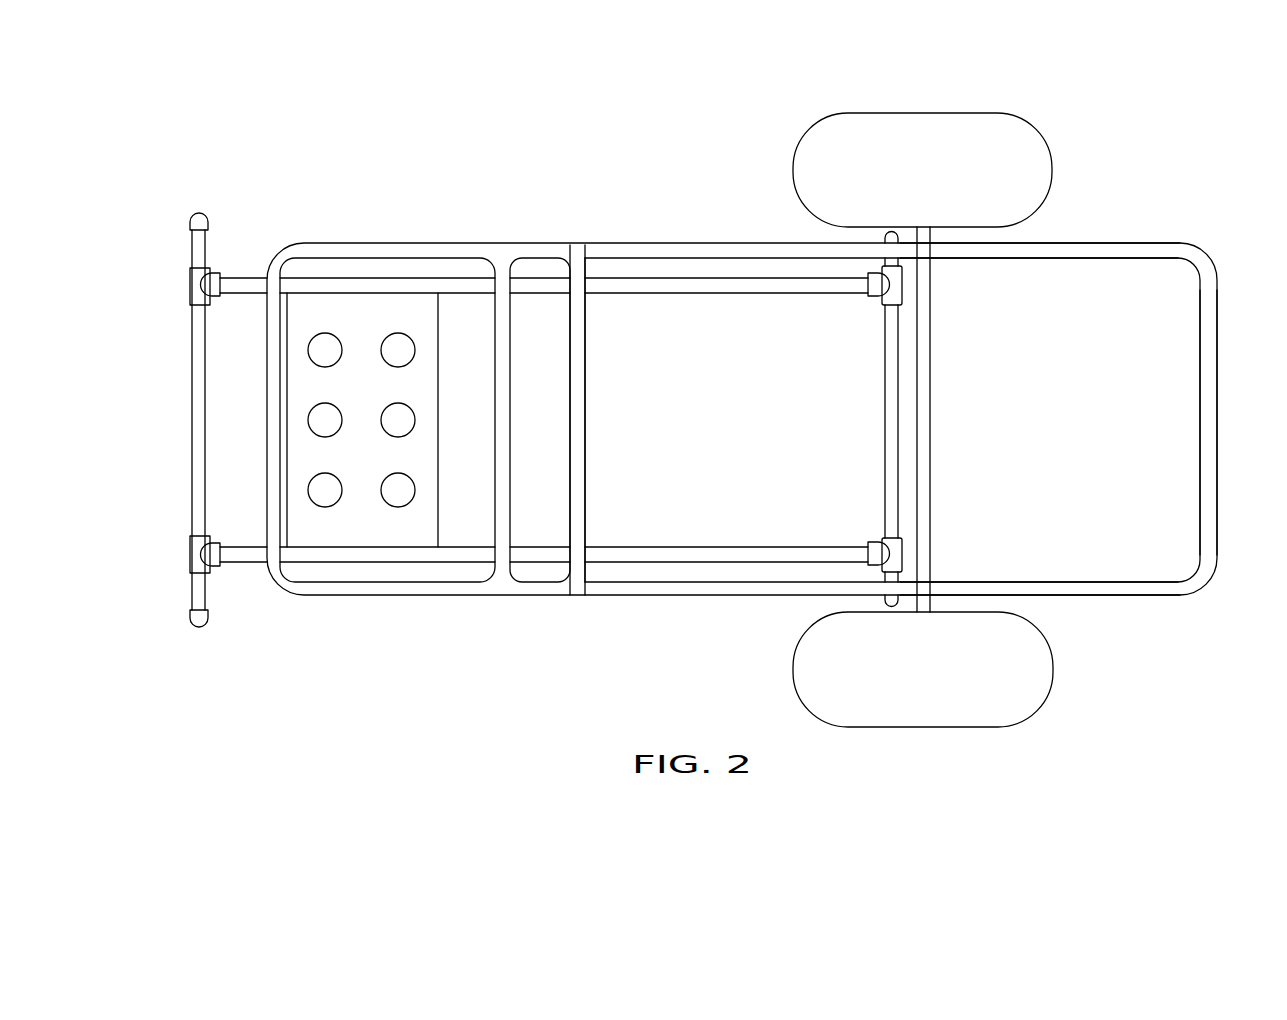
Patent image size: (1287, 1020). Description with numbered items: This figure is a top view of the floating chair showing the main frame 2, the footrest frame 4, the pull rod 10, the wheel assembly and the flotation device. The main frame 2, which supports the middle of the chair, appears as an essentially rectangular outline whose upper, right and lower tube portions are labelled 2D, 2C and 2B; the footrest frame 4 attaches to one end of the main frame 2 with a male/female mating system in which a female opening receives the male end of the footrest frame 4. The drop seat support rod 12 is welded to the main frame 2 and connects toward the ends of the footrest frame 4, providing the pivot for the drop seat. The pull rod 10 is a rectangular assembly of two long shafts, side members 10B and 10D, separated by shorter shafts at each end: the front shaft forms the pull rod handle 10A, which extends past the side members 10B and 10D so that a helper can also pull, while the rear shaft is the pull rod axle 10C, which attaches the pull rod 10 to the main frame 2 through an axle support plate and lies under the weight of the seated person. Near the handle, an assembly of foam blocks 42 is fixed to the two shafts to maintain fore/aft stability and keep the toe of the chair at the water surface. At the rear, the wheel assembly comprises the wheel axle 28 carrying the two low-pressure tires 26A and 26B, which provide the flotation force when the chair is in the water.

The main frame 2 is at (1183, 595).
The frame lower side member 2B is at (1073, 595).
The frame end member 2C is at (1215, 365).
The frame upper side member 2D is at (1087, 243).
The footrest frame 4 is at (387, 595).
The pull rod 10 is at (902, 608).
The pull rod handle 10A is at (195, 351).
The side member 10B is at (661, 547).
The pull rod axle 10C is at (885, 397).
The side member 10D is at (707, 293).
The seat support rod 12 is at (585, 395).
The tire 26A is at (937, 727).
The tire 26B is at (920, 125).
The wheel axle 28 is at (928, 338).
The foam blocks 42 is at (342, 458).